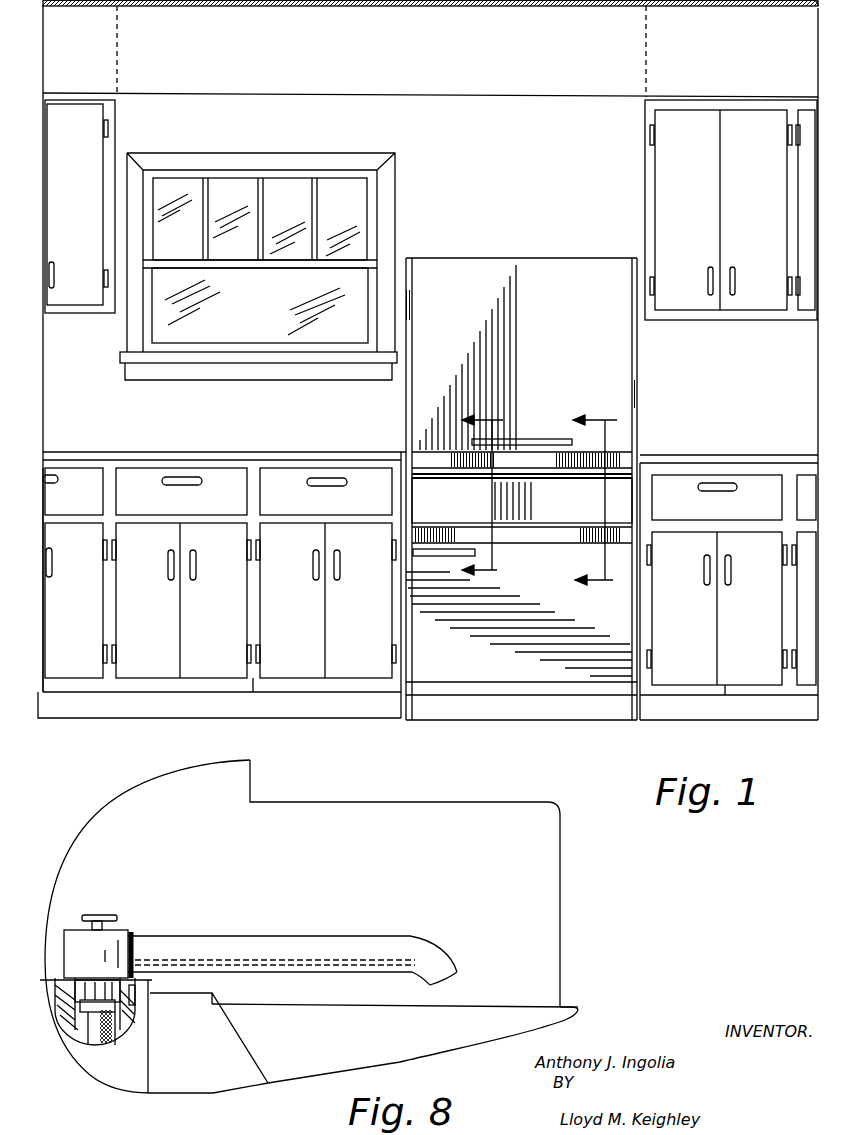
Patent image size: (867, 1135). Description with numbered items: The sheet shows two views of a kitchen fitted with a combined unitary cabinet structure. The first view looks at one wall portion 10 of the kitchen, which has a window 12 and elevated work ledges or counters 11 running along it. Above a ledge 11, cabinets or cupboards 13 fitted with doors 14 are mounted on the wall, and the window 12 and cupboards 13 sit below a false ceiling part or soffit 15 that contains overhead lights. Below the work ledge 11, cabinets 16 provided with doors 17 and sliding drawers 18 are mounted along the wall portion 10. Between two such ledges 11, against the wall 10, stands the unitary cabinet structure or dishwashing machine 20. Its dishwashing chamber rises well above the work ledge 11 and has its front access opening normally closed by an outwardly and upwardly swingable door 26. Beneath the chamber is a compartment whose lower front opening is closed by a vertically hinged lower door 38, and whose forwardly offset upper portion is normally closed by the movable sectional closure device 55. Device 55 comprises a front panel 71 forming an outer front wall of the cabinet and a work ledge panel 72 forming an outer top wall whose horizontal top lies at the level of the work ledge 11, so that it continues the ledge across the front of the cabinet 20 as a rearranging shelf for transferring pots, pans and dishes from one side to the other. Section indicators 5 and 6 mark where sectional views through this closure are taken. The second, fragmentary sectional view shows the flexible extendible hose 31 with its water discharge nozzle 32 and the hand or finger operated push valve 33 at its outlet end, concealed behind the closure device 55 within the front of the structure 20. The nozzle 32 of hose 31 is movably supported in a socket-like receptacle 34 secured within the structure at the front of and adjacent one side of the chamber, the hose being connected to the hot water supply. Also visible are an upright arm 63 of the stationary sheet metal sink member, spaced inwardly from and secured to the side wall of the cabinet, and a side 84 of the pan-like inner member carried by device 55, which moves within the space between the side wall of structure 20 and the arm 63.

In FIG. 1, the wall portion 10 is at (505, 190).
In FIG. 1, the work ledge 11 is at (216, 448).
In FIG. 1, the window 12 is at (278, 196).
In FIG. 1, the cupboard 13 is at (118, 112).
In FIG. 1, the door 14 is at (78, 293).
In FIG. 1, the soffit 15 is at (478, 62).
In FIG. 1, the cabinet 16 is at (252, 683).
In FIG. 1, the door 17 is at (78, 668).
In FIG. 1, the sliding drawer 18 is at (70, 478).
In FIG. 1, the unitary cabinet structure 20 is at (403, 393).
In FIG. 8, the unitary cabinet structure 20 is at (560, 872).
In FIG. 1, the door 26 is at (545, 280).
In FIG. 8, the hose 31 is at (95, 1030).
In FIG. 8, the water discharge nozzle 32 is at (343, 950).
In FIG. 8, the push valve 33 is at (95, 912).
In FIG. 8, the receptacle 34 is at (118, 1058).
In FIG. 1, the lower door 38 is at (495, 667).
In FIG. 1, the sectional closure device 55 is at (552, 505).
In FIG. 8, the sectional closure device 55 is at (578, 998).
In FIG. 8, the upright arm 63 is at (212, 1035).
In FIG. 1, the front panel 71 is at (580, 513).
In FIG. 1, the work ledge panel 72 is at (535, 452).
In FIG. 8, the side 84 is at (537, 1013).
In FIG. 1, the section line 5 is at (595, 503).
In FIG. 1, the section line 6 is at (487, 495).